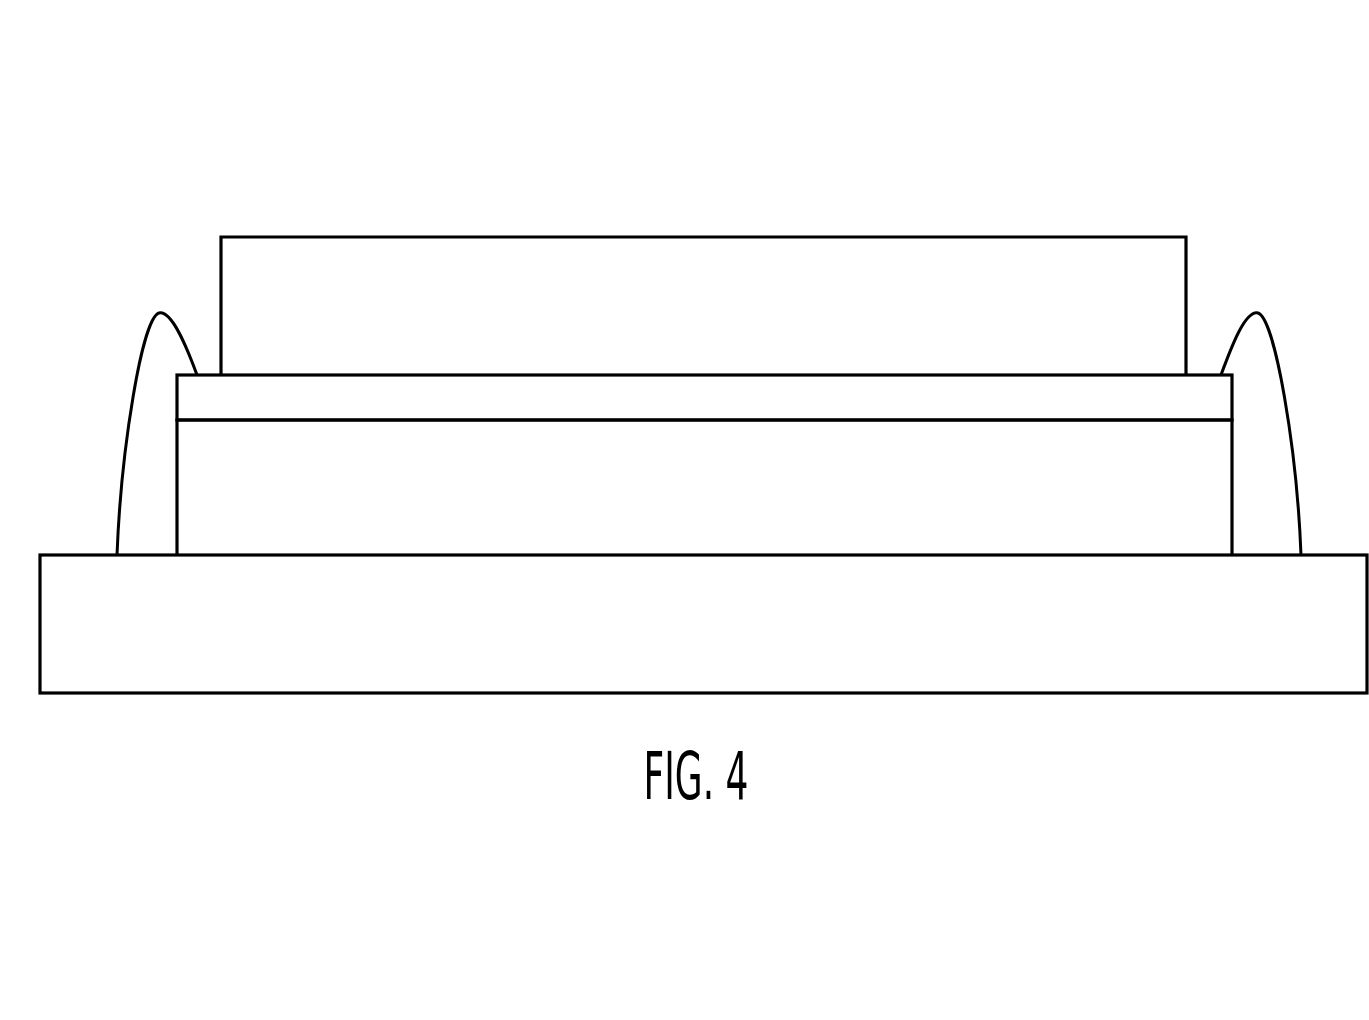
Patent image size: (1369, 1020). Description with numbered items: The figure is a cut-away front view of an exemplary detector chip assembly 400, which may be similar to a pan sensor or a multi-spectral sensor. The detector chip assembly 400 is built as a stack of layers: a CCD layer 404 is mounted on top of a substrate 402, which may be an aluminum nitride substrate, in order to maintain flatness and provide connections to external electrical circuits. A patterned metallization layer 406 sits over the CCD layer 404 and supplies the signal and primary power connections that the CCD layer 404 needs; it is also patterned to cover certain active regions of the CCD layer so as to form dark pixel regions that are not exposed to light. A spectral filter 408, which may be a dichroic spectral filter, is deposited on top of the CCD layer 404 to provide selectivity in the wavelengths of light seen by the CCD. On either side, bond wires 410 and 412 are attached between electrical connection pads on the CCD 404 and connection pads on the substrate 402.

The detector chip assembly 400 is at (721, 193).
The substrate 402 is at (784, 646).
The CCD layer 404 is at (784, 509).
The metallization layer 406 is at (784, 414).
The spectral filter 408 is at (784, 334).
The bond wires 410 is at (155, 311).
The bond wires 412 is at (1261, 311).